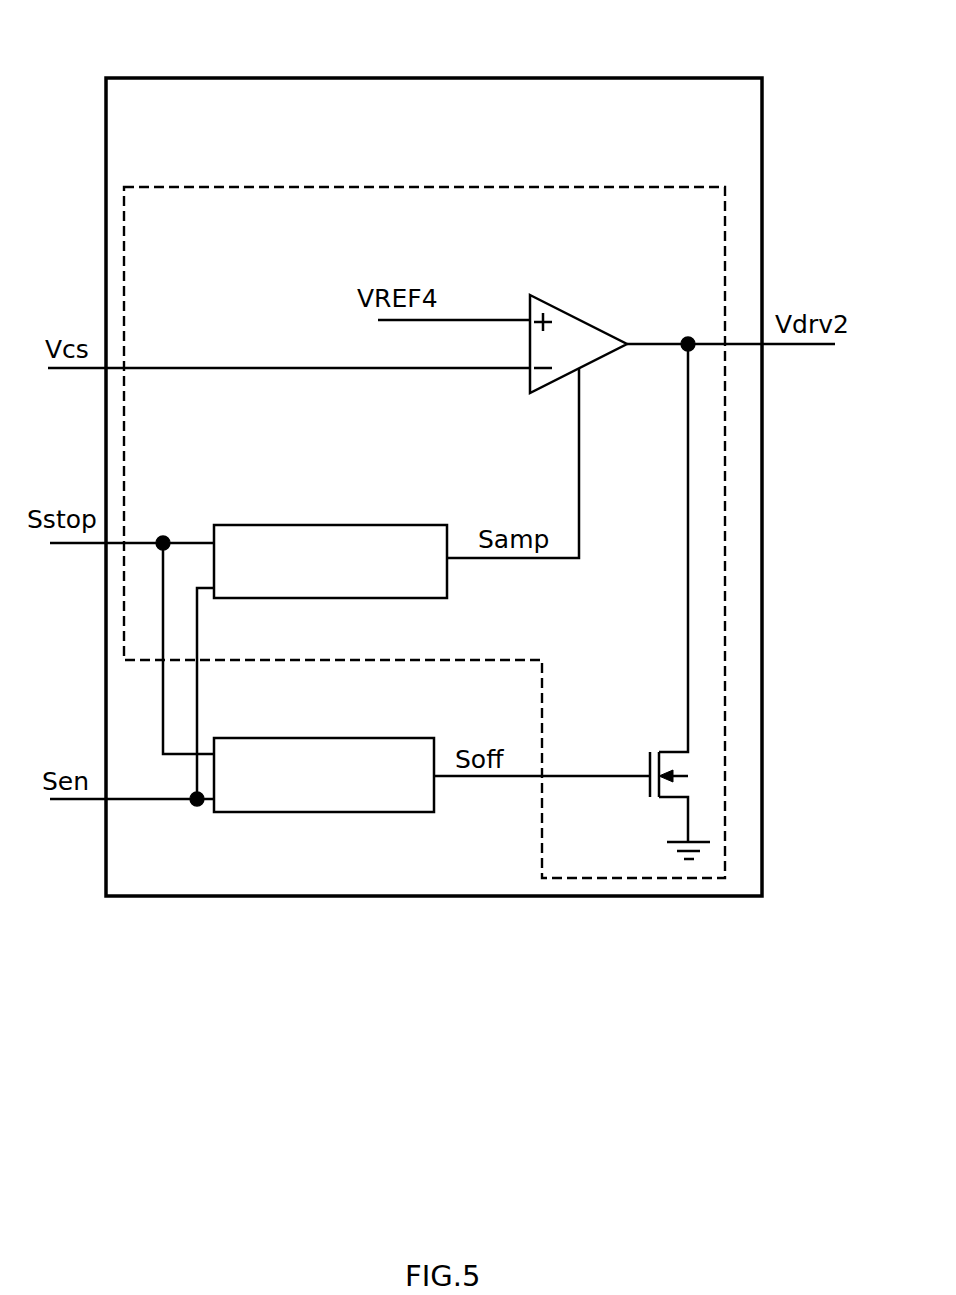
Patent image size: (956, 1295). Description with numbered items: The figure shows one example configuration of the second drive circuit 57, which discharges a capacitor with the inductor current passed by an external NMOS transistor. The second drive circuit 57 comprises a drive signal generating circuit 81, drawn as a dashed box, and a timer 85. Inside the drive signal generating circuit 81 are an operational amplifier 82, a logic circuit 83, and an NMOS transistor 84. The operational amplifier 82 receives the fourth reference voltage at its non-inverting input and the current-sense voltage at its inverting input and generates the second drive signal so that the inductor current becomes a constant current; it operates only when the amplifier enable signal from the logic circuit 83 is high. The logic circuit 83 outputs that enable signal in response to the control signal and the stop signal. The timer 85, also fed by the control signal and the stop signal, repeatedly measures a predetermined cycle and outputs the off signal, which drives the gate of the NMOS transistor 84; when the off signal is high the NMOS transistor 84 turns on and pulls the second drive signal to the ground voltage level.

The second drive circuit 57 is at (300, 78).
The drive signal generating circuit 81 is at (541, 187).
The operational amplifier 82 is at (606, 333).
The logic circuit 83 is at (447, 585).
The NMOS transistor 84 is at (658, 751).
The timer 85 is at (434, 805).